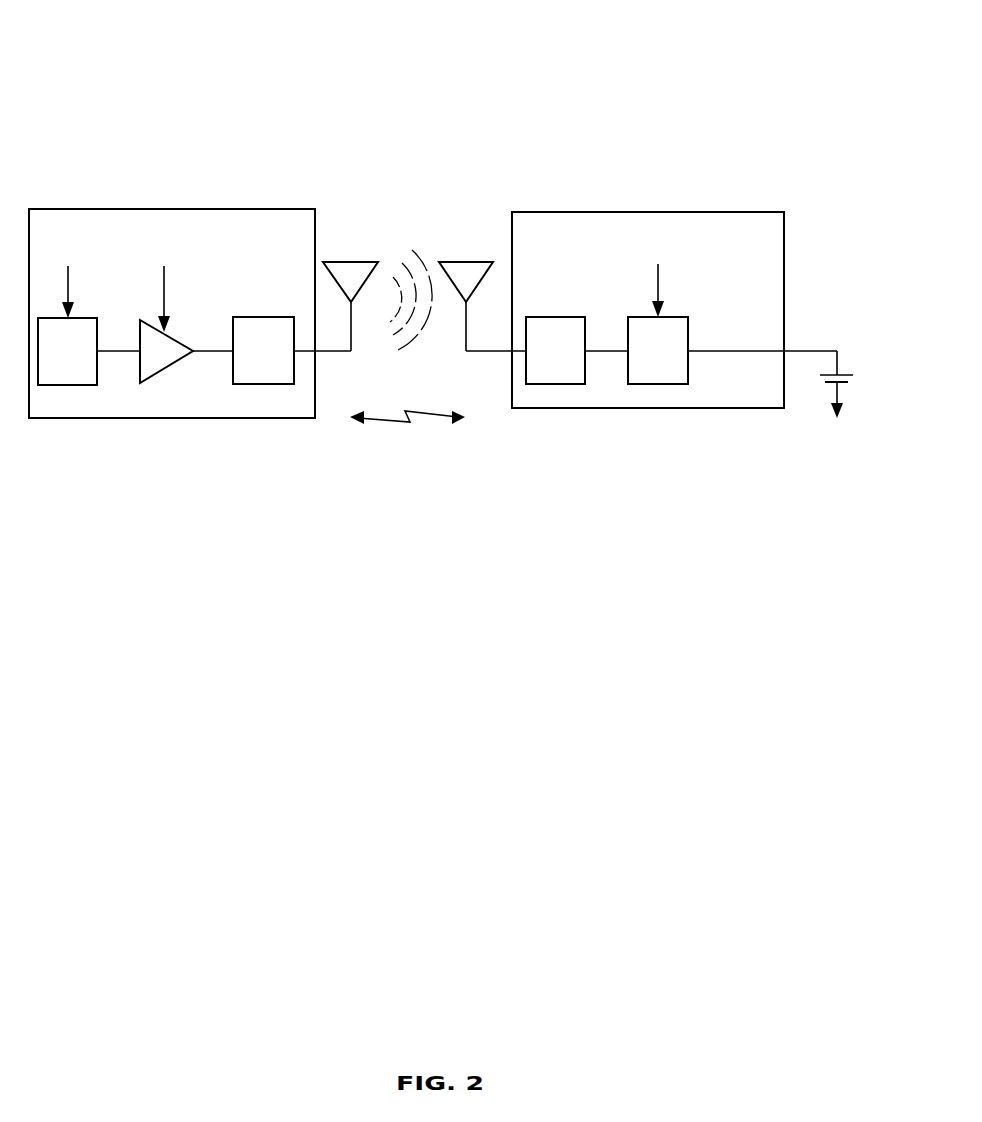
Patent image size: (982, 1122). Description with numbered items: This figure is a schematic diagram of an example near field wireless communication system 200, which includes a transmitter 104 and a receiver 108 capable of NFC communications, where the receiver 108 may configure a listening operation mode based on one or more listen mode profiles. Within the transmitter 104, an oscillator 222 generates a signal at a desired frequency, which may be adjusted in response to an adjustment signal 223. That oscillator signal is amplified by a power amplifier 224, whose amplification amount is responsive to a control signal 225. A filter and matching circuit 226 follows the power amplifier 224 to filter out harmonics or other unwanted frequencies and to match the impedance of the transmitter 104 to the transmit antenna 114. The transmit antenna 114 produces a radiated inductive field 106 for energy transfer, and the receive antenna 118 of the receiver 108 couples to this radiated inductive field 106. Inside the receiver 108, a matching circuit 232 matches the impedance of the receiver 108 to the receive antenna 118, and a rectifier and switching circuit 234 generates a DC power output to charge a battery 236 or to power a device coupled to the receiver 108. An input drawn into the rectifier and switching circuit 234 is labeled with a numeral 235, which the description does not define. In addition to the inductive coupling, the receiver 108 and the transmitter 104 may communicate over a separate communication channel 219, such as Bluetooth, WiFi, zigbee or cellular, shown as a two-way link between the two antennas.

The near field wireless communication system 200 is at (256, 38).
The transmitter 104 is at (172, 313).
The oscillator 222 is at (67, 351).
The adjustment signal 223 is at (68, 276).
The power amplifier 224 is at (166, 357).
The control signal 225 is at (164, 276).
The filter and matching circuit 226 is at (263, 327).
The transmit antenna 114 is at (330, 262).
The radiated inductive field 106 is at (416, 348).
The receive antenna 118 is at (482, 262).
The receiver 108 is at (648, 310).
The matching circuit 232 is at (555, 335).
The rectifier and switching circuit 234 is at (658, 350).
The rectifier switching control input 235 is at (658, 276).
The battery 236 is at (797, 347).
The communication channel 219 is at (413, 437).